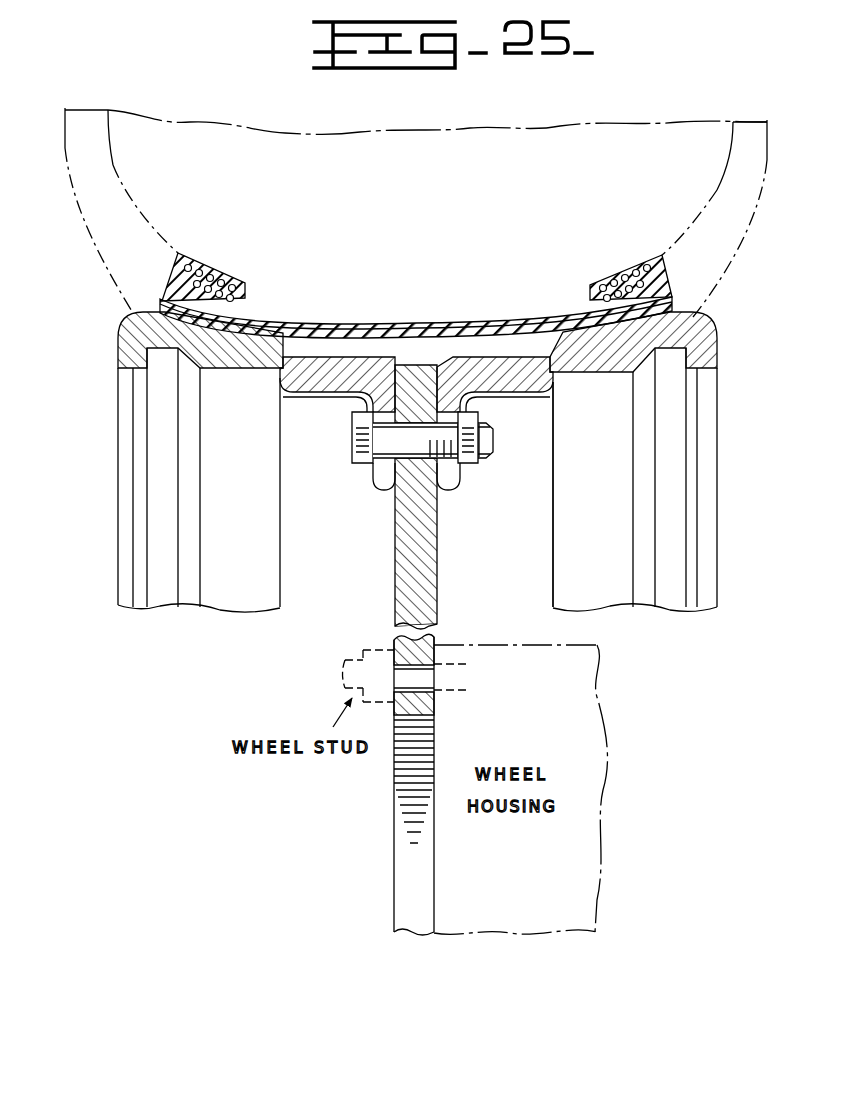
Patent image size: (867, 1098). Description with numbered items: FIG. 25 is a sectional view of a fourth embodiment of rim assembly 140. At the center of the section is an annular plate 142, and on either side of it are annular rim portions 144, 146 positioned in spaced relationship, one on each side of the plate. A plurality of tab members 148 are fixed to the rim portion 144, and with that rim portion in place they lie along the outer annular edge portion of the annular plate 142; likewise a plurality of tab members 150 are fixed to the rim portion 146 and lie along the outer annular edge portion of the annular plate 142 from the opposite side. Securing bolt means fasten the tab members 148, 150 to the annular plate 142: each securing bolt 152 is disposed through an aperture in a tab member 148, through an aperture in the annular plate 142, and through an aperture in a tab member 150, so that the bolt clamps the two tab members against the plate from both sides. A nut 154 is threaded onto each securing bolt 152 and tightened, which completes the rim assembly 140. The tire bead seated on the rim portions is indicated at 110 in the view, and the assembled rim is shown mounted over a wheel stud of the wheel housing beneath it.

The tire bead 110 is at (190, 270).
The rim assembly 140 is at (383, 508).
The annular plate 142 is at (430, 582).
The annular rim portion 144 is at (115, 342).
The annular rim portion 146 is at (724, 329).
The tab member 148 is at (343, 368).
The tab member 150 is at (497, 367).
The securing bolt 152 is at (387, 447).
The nut 154 is at (468, 470).